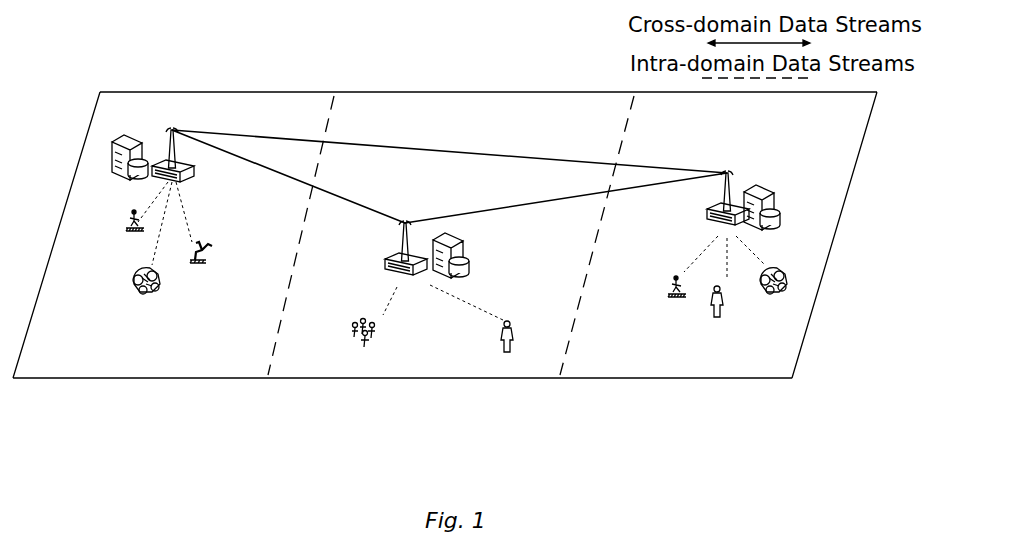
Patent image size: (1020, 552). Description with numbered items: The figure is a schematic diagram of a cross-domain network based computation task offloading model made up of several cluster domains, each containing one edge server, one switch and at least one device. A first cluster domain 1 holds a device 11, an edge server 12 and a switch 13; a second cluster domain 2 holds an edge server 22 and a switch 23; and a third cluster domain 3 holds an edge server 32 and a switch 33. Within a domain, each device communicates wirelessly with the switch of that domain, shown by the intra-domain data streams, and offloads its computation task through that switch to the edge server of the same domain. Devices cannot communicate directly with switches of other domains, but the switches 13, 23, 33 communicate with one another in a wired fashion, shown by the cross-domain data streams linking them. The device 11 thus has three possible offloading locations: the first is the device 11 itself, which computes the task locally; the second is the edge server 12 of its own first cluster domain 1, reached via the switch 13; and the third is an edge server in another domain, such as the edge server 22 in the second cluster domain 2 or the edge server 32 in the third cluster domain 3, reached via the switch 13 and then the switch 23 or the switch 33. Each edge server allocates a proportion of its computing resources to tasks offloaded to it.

The first cluster domain 1 is at (97, 199).
The second cluster domain 2 is at (428, 357).
The third cluster domain 3 is at (693, 350).
The device 11 is at (193, 263).
The edge server 12 is at (133, 149).
The switch 13 is at (168, 131).
The edge server 22 is at (463, 247).
The switch 23 is at (387, 270).
The edge server 32 is at (773, 197).
The switch 33 is at (737, 230).